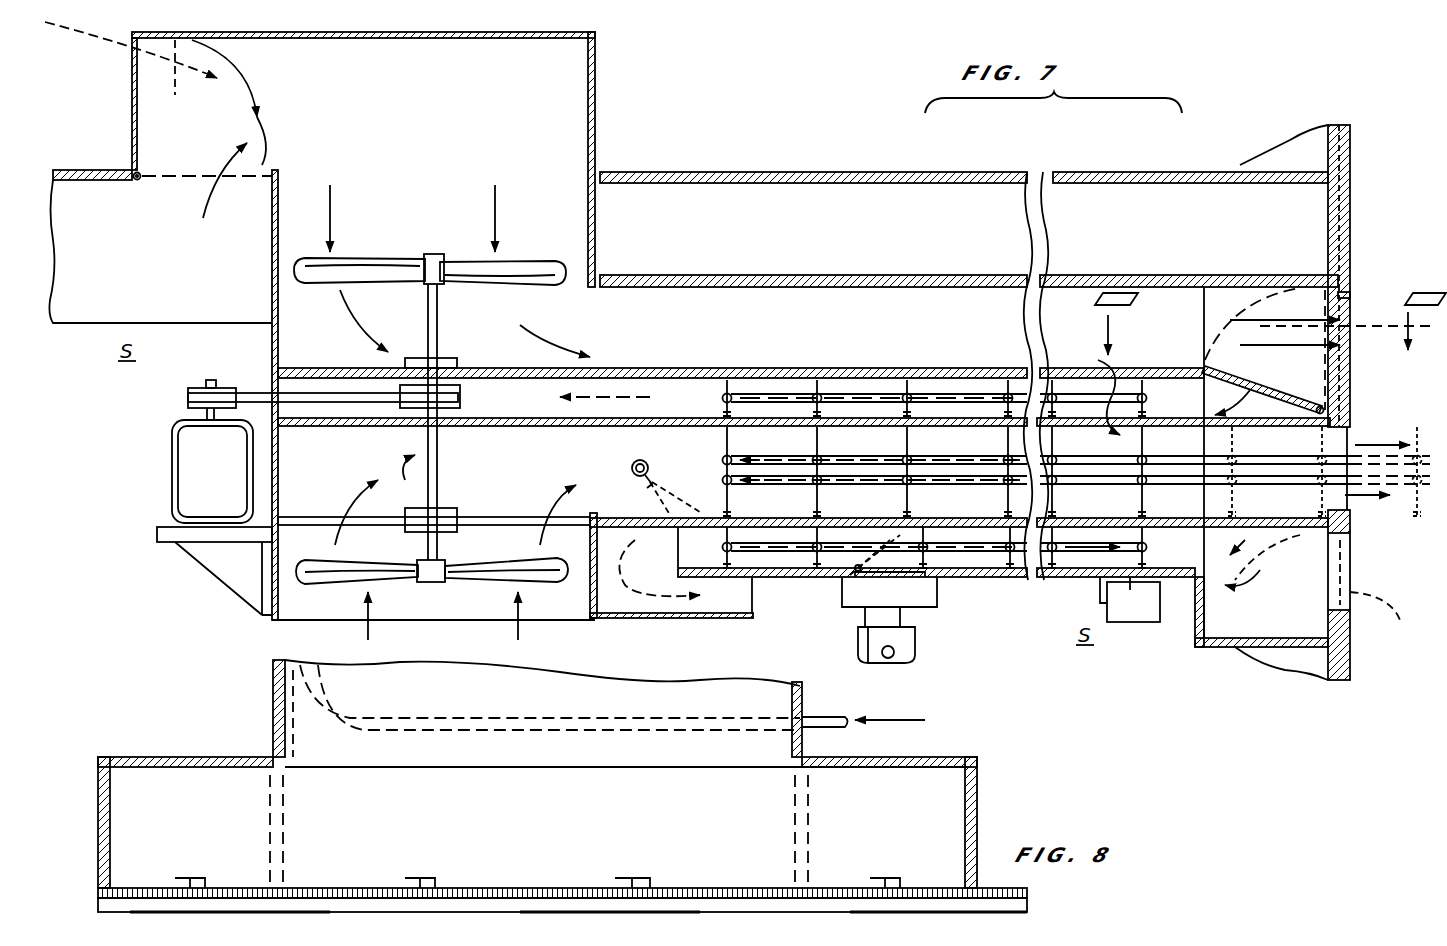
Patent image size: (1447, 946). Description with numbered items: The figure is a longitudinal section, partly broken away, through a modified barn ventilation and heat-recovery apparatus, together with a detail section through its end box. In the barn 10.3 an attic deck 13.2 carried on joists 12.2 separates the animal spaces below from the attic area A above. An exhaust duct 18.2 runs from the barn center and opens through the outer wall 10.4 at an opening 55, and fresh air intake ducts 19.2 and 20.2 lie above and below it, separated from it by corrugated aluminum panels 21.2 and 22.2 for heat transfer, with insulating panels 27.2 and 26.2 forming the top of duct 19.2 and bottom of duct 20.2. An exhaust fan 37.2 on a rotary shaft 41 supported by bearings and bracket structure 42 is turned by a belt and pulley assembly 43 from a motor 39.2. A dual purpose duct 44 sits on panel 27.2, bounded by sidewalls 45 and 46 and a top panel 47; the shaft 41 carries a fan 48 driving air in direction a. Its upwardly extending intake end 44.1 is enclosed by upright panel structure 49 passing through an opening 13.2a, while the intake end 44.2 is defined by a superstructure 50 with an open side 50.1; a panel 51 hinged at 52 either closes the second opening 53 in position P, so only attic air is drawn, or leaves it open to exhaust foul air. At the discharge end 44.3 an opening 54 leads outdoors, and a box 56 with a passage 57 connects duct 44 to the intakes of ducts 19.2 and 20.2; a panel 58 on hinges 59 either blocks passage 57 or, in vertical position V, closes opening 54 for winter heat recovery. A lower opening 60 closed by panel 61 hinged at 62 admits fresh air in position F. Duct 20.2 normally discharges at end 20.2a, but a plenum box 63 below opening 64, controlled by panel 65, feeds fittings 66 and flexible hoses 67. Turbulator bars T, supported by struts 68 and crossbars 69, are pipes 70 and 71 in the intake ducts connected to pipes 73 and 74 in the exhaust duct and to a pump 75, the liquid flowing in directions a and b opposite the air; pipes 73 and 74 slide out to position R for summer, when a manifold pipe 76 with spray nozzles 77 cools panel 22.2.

In FIG. 7, the barn 10.3 is at (1357, 162).
In FIG. 7, the outer wall 10.4 is at (1352, 222).
In FIG. 8, the outer wall 10.4 is at (1002, 908).
In FIG. 7, the joists 12.2 is at (88, 328).
In FIG. 7, the attic deck 13.2 is at (88, 182).
In FIG. 7, the opening 13.2a is at (600, 168).
In FIG. 7, the exhaust duct 18.2 is at (606, 459).
In FIG. 7, the fresh air intake duct 19.2 is at (660, 395).
In FIG. 7, the fresh air intake duct 20.2 is at (990, 580).
In FIG. 7, the discharging end 20.2a is at (732, 618).
In FIG. 7, the corrugated aluminum panel 21.2 is at (505, 426).
In FIG. 7, the corrugated aluminum panel 22.2 is at (838, 520).
In FIG. 7, the insulating panel 26.2 is at (1082, 578).
In FIG. 7, the insulating panel 27.2 is at (995, 368).
In FIG. 8, the insulating panel 27.2 is at (497, 745).
In FIG. 7, the exhaust fan 37.2 is at (495, 574).
In FIG. 7, the motor 39.2 is at (172, 465).
In FIG. 7, the rotary shaft 41 is at (437, 498).
In FIG. 7, the bearings and bracket structure 42 is at (305, 513).
In FIG. 7, the belt and pulley assembly 43 is at (248, 393).
In FIG. 7, the dual purpose exhaust and intake duct 44 is at (875, 317).
In FIG. 8, the dual purpose exhaust and intake duct 44 is at (602, 749).
In FIG. 7, the upwardly extending intake end 44.1 is at (436, 202).
In FIG. 7, the intake end 44.2 is at (344, 116).
In FIG. 7, the discharge end 44.3 is at (1198, 314).
In FIG. 8, the sidewall 45 is at (838, 725).
In FIG. 8, the sidewall 46 is at (273, 692).
In FIG. 7, the top panel 47 is at (960, 274).
In FIG. 7, the fan 48 is at (518, 262).
In FIG. 7, the upright panel structure 49 is at (272, 270).
In FIG. 7, the superstructure 50 is at (592, 40).
In FIG. 7, the open side 50.1 is at (135, 40).
In FIG. 7, the panel or air valve 51 is at (132, 120).
In FIG. 7, the hinge 52 is at (140, 182).
In FIG. 7, the second opening 53 is at (215, 170).
In FIG. 7, the opening 54 is at (1352, 302).
In FIG. 8, the opening 54 is at (312, 905).
In FIG. 7, the opening 55 is at (1350, 452).
In FIG. 7, the box 56 is at (1248, 650).
In FIG. 8, the box 56 is at (133, 757).
In FIG. 7, the transverse interior flow space or passage 57 is at (1302, 373).
In FIG. 8, the transverse interior flow space or passage 57 is at (98, 860).
In FIG. 7, the panel or air valve 58 is at (1250, 385).
In FIG. 8, the panel or air valve 58 is at (602, 809).
In FIG. 7, the hinges 59 is at (1328, 410).
In FIG. 8, the hinges 59 is at (575, 878).
In FIG. 7, the additional opening 60 is at (1352, 600).
In FIG. 7, the air valve panel 61 is at (1348, 580).
In FIG. 7, the hinge 62 is at (1350, 538).
In FIG. 7, the receiving or plenum box 63 is at (920, 598).
In FIG. 7, the opening 64 is at (935, 575).
In FIG. 7, the air valve panel 65 is at (858, 582).
In FIG. 7, the discharge duct fittings 66 is at (870, 620).
In FIG. 7, the flexible hoses 67 is at (900, 650).
In FIG. 7, the struts 68 is at (810, 410).
In FIG. 7, the crossbars 69 is at (828, 412).
In FIG. 7, the pipe 70 is at (897, 394).
In FIG. 7, the pipe 71 is at (975, 555).
In FIG. 7, the pipe 73 is at (985, 458).
In FIG. 7, the pipe 74 is at (985, 482).
In FIG. 7, the pump 75 is at (1138, 625).
In FIG. 7, the manifold pipe 76 is at (644, 460).
In FIG. 7, the spray nozzles 77 is at (640, 478).
In FIG. 7, the attic area A is at (806, 131).
In FIG. 7, the dotted line position P is at (262, 165).
In FIG. 7, the turbulator bars T is at (755, 392).
In FIG. 8, the turbulator bars T is at (332, 722).
In FIG. 7, the vertical position V is at (1325, 308).
In FIG. 7, the dotted line position R is at (1395, 488).
In FIG. 7, the dotted line position F is at (1383, 614).
In FIG. 7, the arrows a is at (1163, 545).
In FIG. 7, the arrows b is at (768, 462).